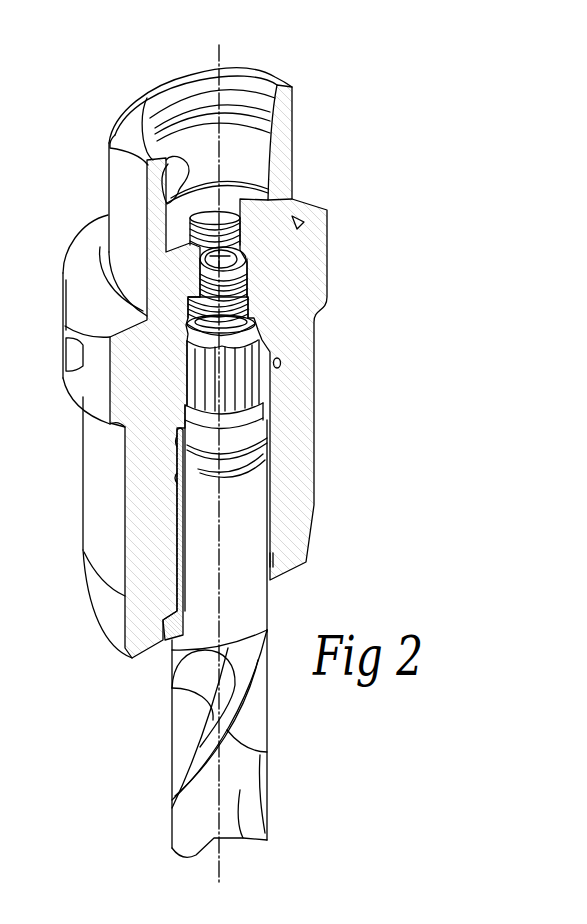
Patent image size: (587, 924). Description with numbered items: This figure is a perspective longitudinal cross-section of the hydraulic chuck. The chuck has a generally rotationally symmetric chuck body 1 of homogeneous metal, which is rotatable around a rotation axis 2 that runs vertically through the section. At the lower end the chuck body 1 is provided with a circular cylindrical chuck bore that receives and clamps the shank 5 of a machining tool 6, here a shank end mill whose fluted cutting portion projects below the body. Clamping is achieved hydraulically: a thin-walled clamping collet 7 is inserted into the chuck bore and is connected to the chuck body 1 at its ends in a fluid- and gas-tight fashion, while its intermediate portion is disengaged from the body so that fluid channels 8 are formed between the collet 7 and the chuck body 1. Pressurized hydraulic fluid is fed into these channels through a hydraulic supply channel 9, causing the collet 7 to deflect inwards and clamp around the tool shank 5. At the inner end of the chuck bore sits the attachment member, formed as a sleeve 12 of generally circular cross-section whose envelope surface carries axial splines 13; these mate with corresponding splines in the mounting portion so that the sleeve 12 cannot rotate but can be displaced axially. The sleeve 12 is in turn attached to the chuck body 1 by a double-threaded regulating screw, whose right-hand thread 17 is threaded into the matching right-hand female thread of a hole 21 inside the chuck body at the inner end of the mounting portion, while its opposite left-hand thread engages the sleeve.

The chuck body 1 is at (297, 441).
The rotation axis 2 is at (214, 60).
The shank 5 is at (248, 598).
The machining tool 6 is at (145, 690).
The clamping collet 7 is at (178, 550).
The fluid channels 8 is at (175, 477).
The hydraulic supply channel 9 is at (279, 366).
The sleeve 12 is at (253, 323).
The splines 13 is at (249, 347).
The right-hand thread 17 is at (241, 279).
The hole 21 is at (231, 224).